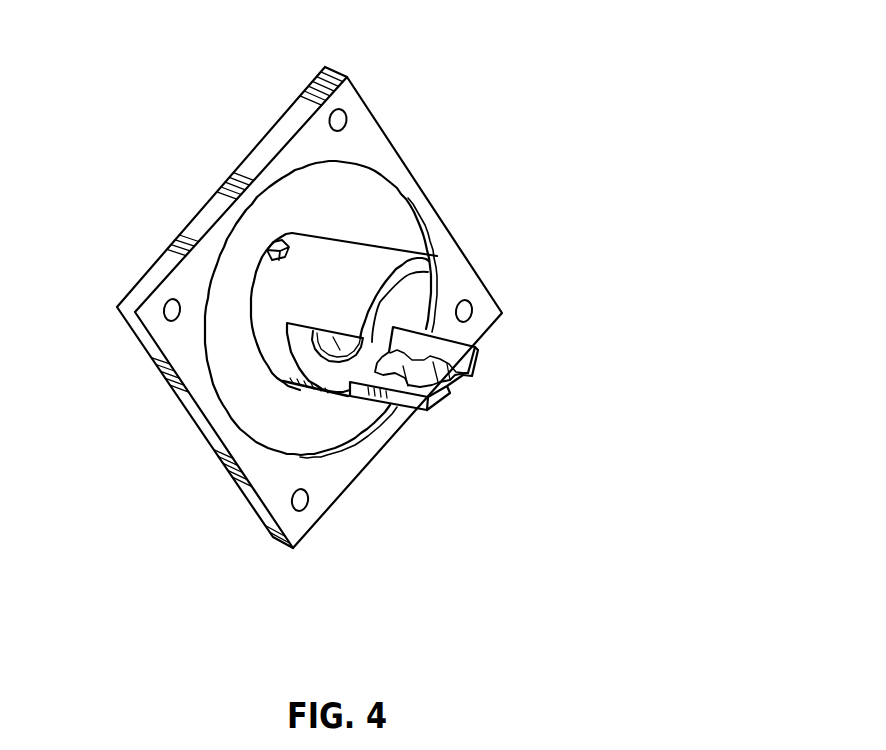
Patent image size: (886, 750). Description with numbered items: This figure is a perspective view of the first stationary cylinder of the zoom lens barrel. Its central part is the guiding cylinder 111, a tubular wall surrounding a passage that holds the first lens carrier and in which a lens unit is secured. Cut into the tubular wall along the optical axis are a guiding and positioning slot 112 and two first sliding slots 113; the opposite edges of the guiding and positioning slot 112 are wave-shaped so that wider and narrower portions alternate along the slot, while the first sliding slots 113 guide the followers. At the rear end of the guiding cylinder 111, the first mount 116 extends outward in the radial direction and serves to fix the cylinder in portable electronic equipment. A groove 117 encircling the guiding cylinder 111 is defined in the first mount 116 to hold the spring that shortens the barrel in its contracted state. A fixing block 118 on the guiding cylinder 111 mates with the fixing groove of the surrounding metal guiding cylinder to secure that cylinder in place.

The guiding cylinder 111 is at (363, 268).
The guiding and positioning slot 112 is at (457, 390).
The first sliding slot 113 is at (433, 257).
The first mount 116 is at (275, 480).
The groove 117 is at (317, 207).
The fixing block 118 is at (267, 250).